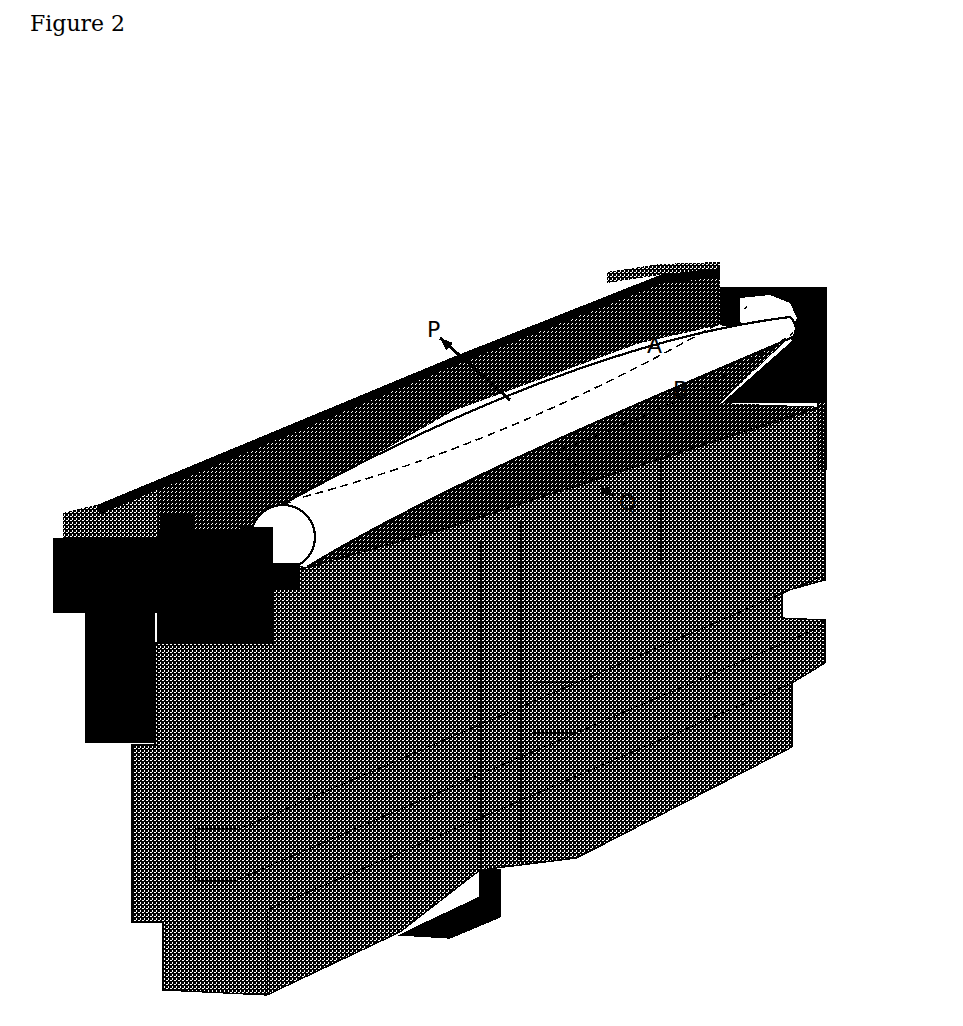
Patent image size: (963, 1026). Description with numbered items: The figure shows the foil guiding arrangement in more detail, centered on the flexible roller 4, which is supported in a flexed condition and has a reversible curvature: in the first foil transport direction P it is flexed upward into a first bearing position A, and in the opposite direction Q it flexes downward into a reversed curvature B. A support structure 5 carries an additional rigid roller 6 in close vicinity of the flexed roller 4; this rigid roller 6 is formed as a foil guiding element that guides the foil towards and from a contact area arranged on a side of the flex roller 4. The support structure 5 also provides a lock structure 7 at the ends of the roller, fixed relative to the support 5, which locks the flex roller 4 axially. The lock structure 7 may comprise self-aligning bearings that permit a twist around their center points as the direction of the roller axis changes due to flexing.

The roller 4 is at (300, 498).
The support structure 5 is at (307, 738).
The rigid roller 6 is at (293, 443).
The lock structure 7 is at (160, 530).